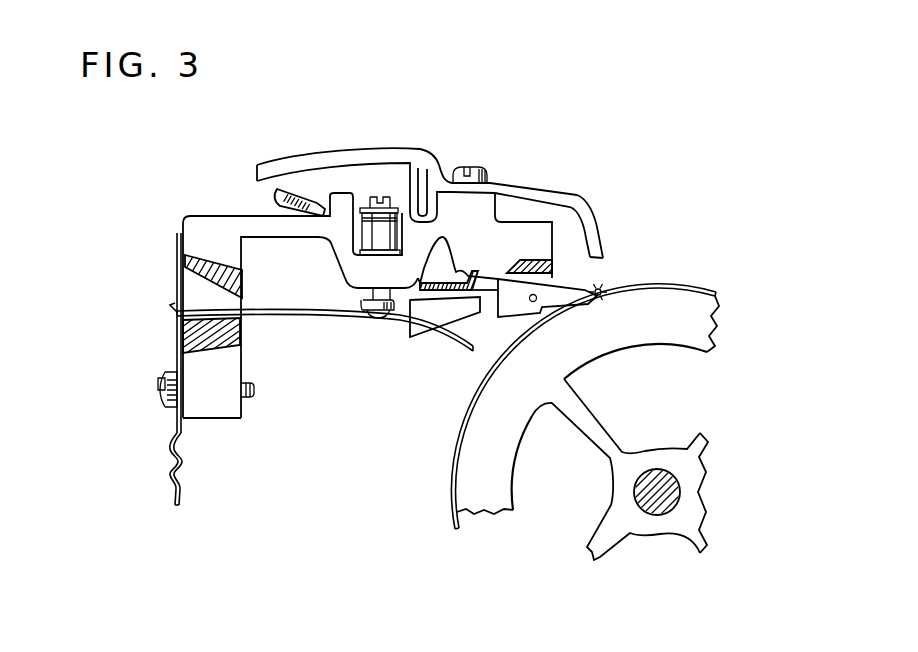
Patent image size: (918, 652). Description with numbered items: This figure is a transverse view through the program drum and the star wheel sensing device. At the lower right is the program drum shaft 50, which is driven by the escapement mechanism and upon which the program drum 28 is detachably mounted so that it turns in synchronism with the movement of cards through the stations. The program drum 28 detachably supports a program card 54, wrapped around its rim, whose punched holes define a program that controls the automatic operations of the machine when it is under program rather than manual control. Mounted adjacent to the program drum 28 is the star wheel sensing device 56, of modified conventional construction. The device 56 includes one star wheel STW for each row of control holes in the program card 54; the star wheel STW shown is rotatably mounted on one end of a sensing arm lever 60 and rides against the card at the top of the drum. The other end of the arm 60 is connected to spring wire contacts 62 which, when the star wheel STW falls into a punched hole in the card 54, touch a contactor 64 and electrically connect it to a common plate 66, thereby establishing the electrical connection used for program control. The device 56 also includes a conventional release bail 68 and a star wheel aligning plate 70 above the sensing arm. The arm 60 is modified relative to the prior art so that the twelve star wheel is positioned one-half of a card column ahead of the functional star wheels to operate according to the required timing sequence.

The star wheel aligning plate 70 is at (427, 150).
The star wheel sensing device 56 is at (592, 189).
The release bail 68 is at (428, 287).
The contactor 64 is at (365, 303).
The spring wire contacts 62 is at (353, 322).
The common plate 66 is at (183, 478).
The sensing arm lever 60 is at (527, 311).
The star wheel STW is at (607, 287).
The program drum 28 is at (683, 305).
The program card 54 is at (460, 460).
The program drum shaft 50 is at (633, 488).